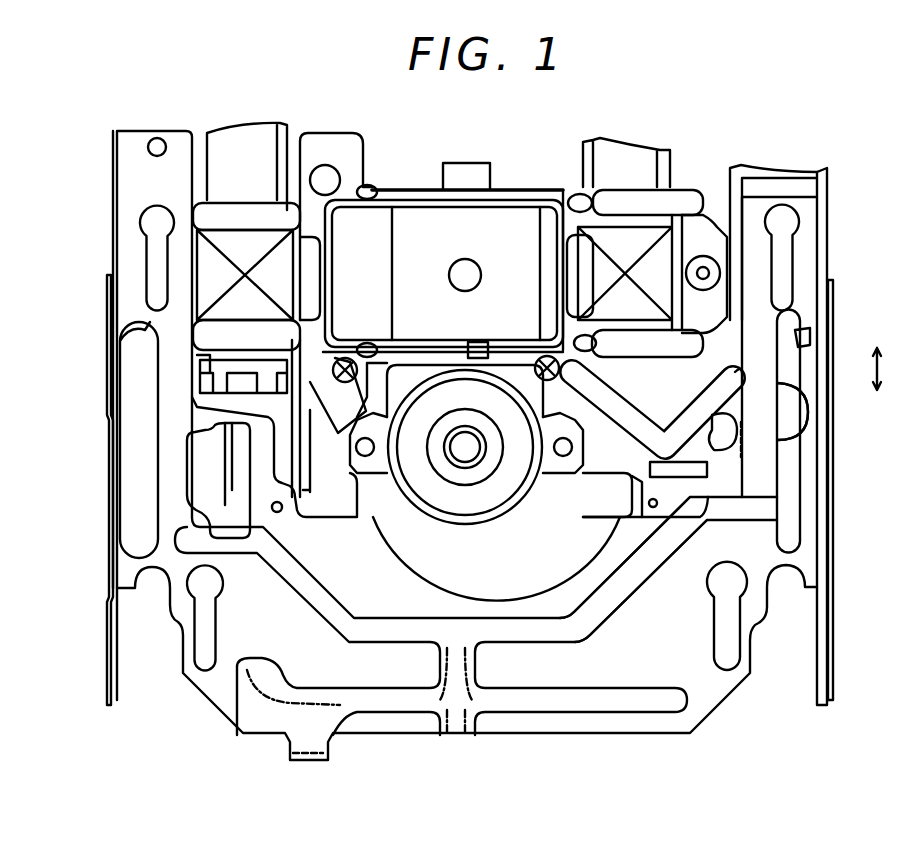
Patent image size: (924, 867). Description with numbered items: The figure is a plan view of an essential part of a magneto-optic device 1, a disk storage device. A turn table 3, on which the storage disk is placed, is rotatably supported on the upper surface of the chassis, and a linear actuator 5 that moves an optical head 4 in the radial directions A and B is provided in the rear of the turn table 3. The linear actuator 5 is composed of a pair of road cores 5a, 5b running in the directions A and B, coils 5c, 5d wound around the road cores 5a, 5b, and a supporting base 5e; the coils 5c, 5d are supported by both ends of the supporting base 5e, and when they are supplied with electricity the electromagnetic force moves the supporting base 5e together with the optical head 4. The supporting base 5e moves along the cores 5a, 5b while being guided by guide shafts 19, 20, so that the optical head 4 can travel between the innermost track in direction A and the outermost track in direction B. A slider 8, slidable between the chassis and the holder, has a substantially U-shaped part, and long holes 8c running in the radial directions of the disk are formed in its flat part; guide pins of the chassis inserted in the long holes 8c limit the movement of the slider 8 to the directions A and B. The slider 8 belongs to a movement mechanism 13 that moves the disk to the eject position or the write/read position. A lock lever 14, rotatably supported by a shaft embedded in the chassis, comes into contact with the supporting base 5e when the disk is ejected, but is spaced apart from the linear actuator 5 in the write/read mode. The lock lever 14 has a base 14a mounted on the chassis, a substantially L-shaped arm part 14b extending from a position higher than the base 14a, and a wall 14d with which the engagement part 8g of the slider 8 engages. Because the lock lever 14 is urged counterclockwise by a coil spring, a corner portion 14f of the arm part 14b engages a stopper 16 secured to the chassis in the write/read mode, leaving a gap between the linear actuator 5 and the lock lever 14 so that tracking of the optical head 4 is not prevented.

The magneto-optic device 1 is at (500, 124).
The turn table 3 is at (465, 497).
The optical head 4 is at (407, 217).
The linear actuator 5 is at (165, 258).
The road core 5a is at (205, 357).
The road core 5b is at (647, 180).
The coil 5c is at (203, 272).
The coil 5d is at (660, 260).
The supporting base 5e is at (507, 197).
The slider 8 is at (557, 717).
The long holes 8c is at (153, 250).
The engagement part 8g is at (737, 450).
The movement mechanism 13 is at (105, 678).
The lock lever 14 is at (725, 466).
The base 14a is at (793, 412).
The arm part 14b is at (545, 473).
The wall 14d is at (745, 418).
The corner portion 14f is at (685, 447).
The stopper 16 is at (673, 470).
The guide shaft 19 is at (303, 500).
The guide shaft 20 is at (740, 170).